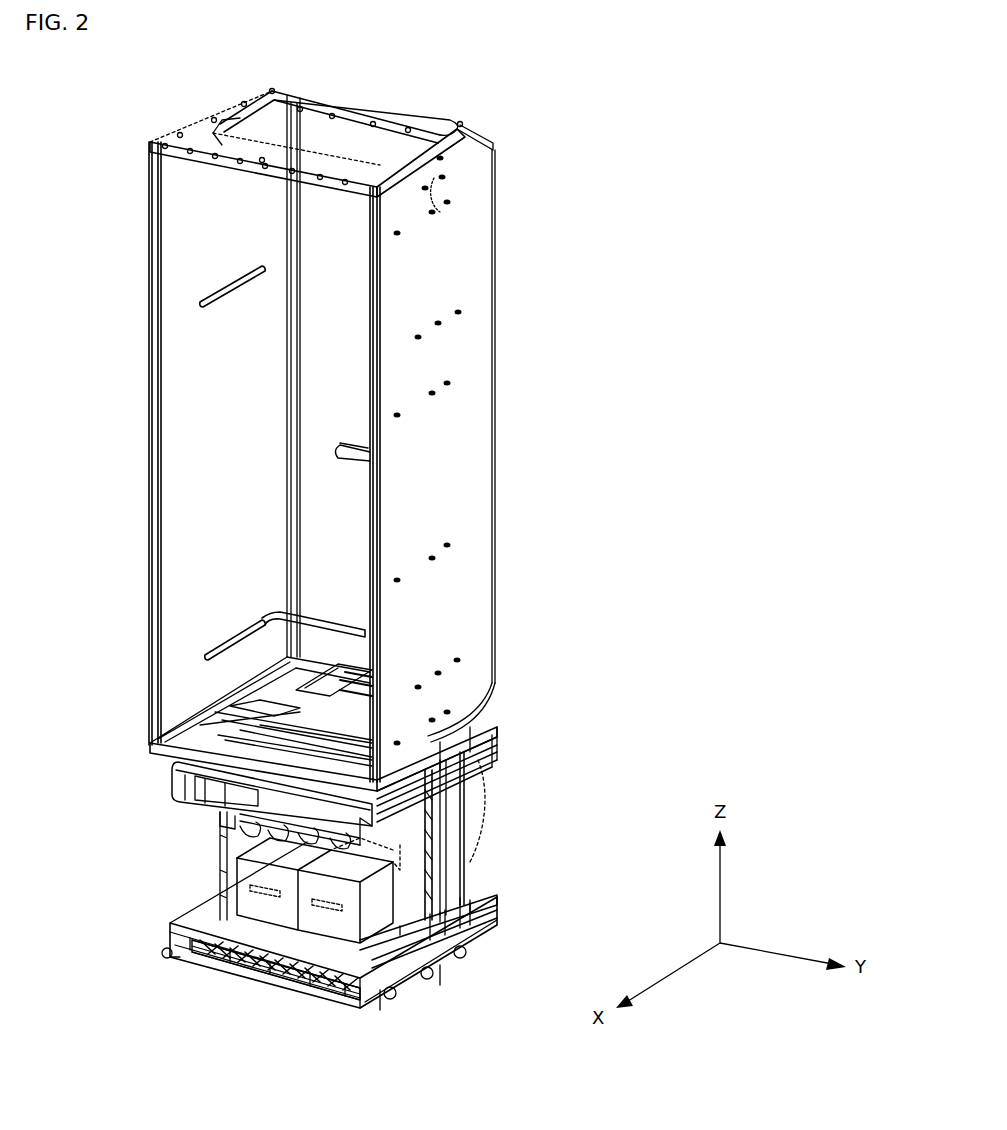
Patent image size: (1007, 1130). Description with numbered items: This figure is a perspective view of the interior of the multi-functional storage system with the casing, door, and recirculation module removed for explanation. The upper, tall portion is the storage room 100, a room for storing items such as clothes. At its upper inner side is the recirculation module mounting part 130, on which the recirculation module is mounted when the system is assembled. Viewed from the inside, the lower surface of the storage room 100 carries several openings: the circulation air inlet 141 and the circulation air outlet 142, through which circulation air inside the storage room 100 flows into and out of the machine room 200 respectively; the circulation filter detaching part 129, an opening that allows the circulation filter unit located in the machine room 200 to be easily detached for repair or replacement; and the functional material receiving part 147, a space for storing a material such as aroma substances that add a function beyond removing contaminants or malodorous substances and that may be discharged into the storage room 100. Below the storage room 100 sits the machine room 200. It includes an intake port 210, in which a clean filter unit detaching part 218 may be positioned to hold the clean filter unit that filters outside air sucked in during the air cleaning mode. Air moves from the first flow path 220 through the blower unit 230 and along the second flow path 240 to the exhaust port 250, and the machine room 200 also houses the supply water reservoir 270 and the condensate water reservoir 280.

The storage room 100 is at (322, 298).
The recirculation module mounting part 130 is at (338, 140).
The circulation air inlet 141 is at (380, 658).
The functional material receiving part 147 is at (290, 648).
The circulation air outlet 142 is at (172, 730).
The circulation filter detaching part 129 is at (482, 748).
The machine room 200 is at (512, 872).
The exhaust port 250 is at (203, 802).
The second flow path 240 is at (472, 756).
The blower unit 230 is at (472, 822).
The supply water reservoir 270 is at (250, 877).
The first flow path 220 is at (437, 922).
The condensate water reservoir 280 is at (445, 938).
The intake port 210 is at (228, 980).
The clean filter unit detaching part 218 is at (300, 987).